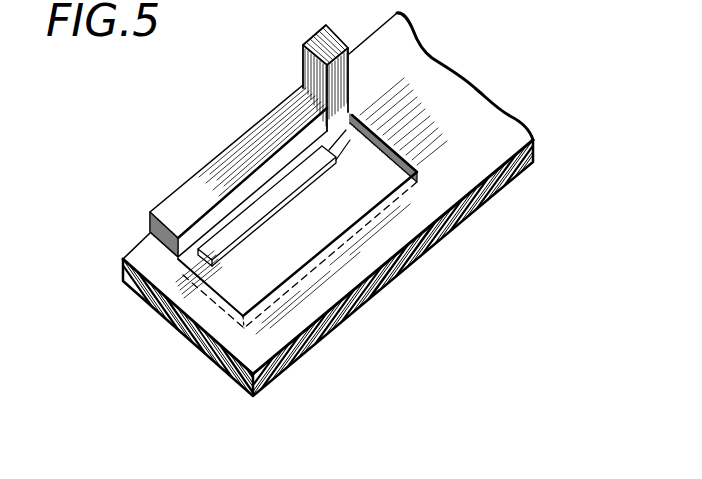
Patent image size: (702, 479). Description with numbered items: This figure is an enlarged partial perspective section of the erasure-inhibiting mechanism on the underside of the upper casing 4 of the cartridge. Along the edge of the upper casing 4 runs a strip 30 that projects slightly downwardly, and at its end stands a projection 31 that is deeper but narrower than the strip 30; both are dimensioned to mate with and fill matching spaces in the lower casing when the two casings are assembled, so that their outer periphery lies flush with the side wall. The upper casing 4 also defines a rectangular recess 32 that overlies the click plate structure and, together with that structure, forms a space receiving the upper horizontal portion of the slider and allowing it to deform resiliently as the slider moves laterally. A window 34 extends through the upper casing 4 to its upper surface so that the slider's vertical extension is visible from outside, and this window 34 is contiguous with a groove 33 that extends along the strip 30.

The upper casing 4 is at (492, 122).
The strip 30 is at (210, 176).
The projection 31 is at (302, 68).
The rectangular recess 32 is at (350, 218).
The groove 33 is at (243, 227).
The window 34 is at (347, 140).